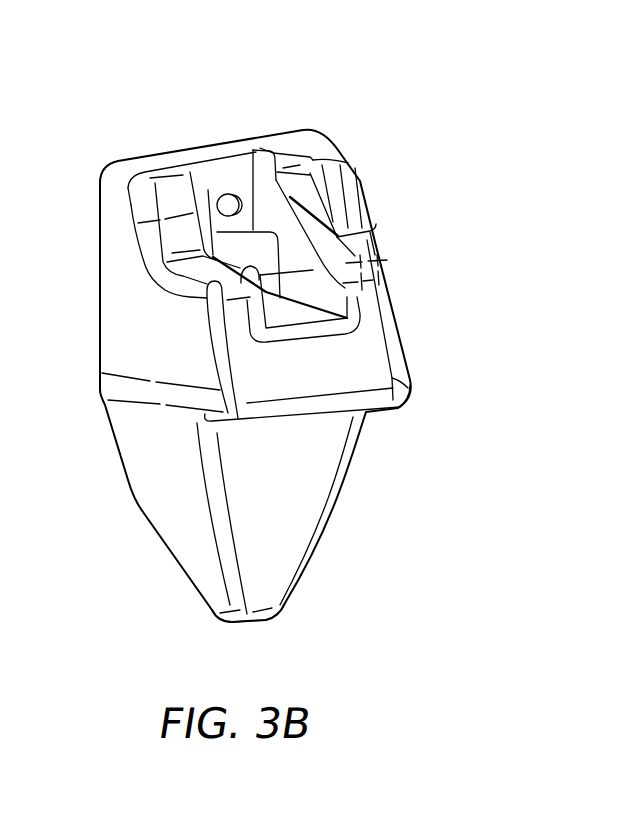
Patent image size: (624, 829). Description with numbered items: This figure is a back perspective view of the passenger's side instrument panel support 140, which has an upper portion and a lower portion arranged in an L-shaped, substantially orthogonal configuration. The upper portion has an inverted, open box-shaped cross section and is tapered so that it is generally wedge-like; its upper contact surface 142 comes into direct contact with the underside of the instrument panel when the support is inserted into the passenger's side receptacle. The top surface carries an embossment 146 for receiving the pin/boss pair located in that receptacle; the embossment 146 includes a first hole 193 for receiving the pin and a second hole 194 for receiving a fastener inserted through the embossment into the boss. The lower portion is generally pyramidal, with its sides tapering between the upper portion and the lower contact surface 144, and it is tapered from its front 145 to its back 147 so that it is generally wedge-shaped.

The passenger's side instrument panel support 140 is at (327, 109).
The upper contact surface 142 is at (371, 200).
The lower contact surface 144 is at (254, 622).
The front 145 is at (100, 343).
The embossment 146 is at (227, 179).
The back 147 is at (402, 399).
The first hole 193 is at (216, 202).
The second hole 194 is at (345, 288).